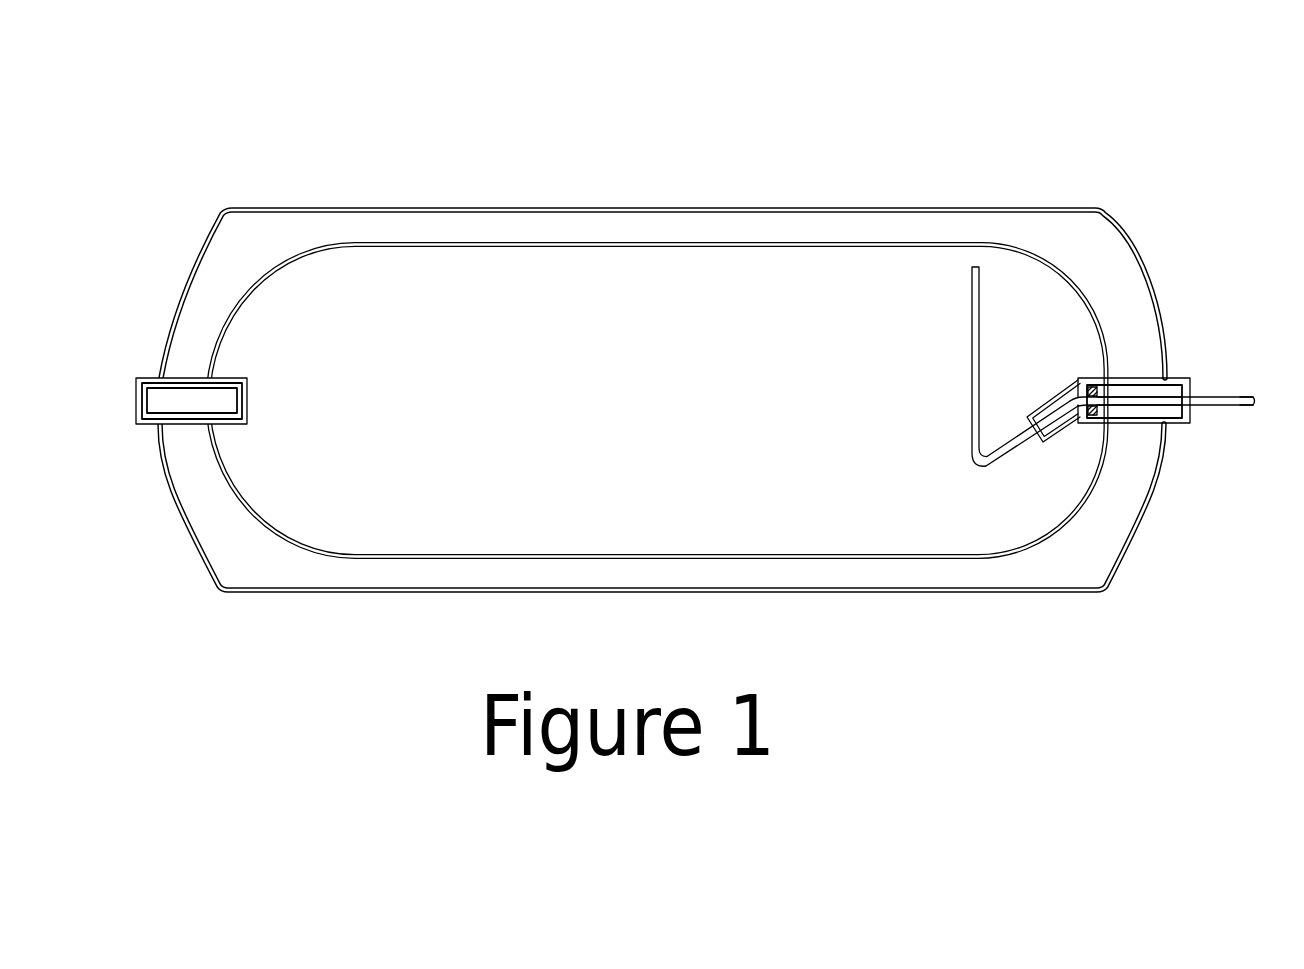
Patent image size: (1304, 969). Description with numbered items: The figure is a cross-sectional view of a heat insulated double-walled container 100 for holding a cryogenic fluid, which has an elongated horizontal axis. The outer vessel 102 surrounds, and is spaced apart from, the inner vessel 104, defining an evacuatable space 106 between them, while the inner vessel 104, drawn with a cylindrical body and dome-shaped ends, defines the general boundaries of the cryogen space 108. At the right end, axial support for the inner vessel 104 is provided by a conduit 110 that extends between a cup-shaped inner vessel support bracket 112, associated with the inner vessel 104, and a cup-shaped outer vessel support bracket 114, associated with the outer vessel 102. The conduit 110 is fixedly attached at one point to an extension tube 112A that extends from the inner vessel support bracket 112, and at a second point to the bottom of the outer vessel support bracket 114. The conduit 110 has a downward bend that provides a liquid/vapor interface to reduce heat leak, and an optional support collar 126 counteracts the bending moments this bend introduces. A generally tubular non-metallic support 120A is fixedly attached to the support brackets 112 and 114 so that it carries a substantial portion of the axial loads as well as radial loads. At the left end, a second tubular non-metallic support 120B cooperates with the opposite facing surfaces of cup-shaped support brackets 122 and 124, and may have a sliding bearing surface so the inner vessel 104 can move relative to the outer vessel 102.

The double-walled container 100 is at (360, 125).
The outer vessel 102 is at (767, 209).
The inner vessel 104 is at (703, 243).
The evacuatable space 106 is at (270, 571).
The cryogen space 108 is at (600, 406).
The conduit 110 is at (1213, 400).
The inner vessel support bracket 112 is at (1135, 383).
The extension tube 112A is at (1057, 437).
The outer vessel support bracket 114 is at (1192, 377).
The non-metallic support 120A is at (1163, 378).
The non-metallic support 120B is at (187, 380).
The support bracket 122 is at (233, 378).
The support bracket 124 is at (142, 377).
The support collar 126 is at (1087, 380).